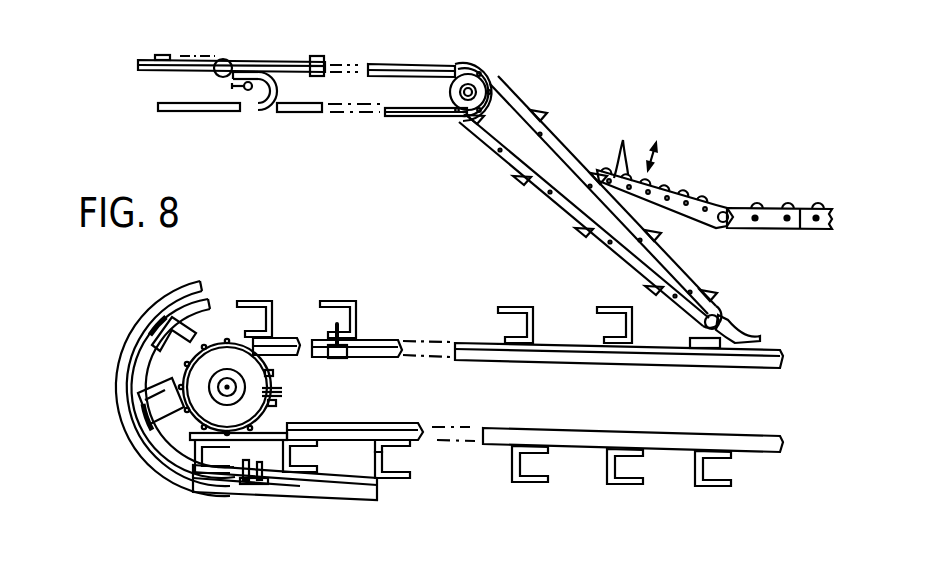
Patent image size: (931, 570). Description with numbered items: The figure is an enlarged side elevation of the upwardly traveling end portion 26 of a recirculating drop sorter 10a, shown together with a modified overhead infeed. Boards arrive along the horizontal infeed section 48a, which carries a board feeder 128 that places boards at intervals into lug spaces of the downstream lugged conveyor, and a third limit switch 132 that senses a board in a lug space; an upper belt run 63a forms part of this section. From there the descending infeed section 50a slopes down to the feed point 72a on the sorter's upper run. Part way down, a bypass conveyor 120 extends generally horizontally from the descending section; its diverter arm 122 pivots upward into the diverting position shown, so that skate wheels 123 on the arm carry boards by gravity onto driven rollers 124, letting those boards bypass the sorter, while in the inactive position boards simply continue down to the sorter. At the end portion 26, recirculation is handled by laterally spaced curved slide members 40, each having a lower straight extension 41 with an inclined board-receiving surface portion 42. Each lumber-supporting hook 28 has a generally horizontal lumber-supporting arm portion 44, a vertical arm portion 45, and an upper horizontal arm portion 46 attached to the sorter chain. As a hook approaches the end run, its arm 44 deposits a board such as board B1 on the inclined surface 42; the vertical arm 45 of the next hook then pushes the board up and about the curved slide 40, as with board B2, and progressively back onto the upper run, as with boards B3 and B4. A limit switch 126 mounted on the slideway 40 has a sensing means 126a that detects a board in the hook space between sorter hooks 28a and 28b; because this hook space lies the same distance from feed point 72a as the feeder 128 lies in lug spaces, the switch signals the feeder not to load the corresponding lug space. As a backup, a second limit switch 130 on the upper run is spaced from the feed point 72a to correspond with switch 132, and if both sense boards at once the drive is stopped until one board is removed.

The upper conveyor belt run 63a is at (197, 58).
The horizontal infeed section 48a is at (383, 54).
The board feeder 128 is at (216, 74).
The third limit switch 132 is at (313, 77).
The descending infeed section 50a is at (508, 190).
The bypass conveyor 120 is at (714, 172).
The diverter arm 122 is at (668, 186).
The skate wheels 123 is at (618, 150).
The driven rollers 124 is at (758, 206).
The drop sorter 10a is at (434, 322).
The feed point 72a is at (758, 338).
The upwardly traveling end portion 26 is at (108, 350).
The curved slide member 40 is at (122, 420).
The board B1 is at (228, 486).
The board B2 is at (182, 372).
The board B3 is at (207, 335).
The board B4 is at (284, 332).
The second limit switch 130 is at (327, 358).
The vertical arm portion 45 is at (378, 453).
The inclined board-receiving surface portion 42 is at (338, 474).
The lumber-supporting hook 28 is at (412, 483).
The horizontal arm portion 46 is at (405, 449).
The lumber-supporting arm portion 44 is at (398, 478).
The lower straight extension 41 is at (368, 490).
The sorter hook 28b is at (288, 481).
The sorter hook 28a is at (222, 475).
The limit switch 126 is at (245, 483).
The sensing means 126a is at (252, 483).